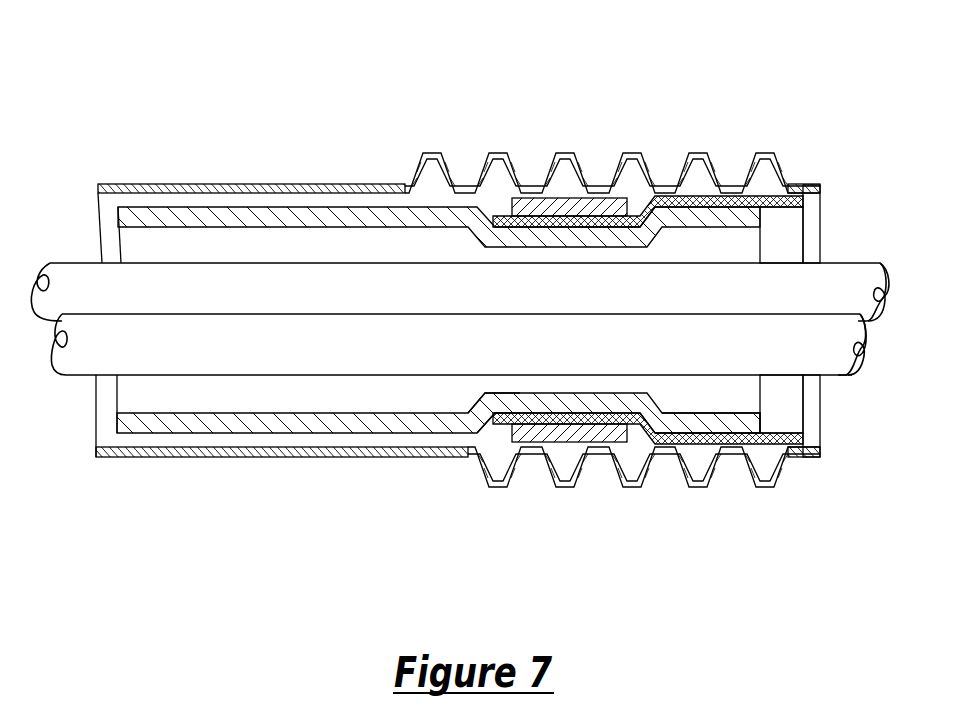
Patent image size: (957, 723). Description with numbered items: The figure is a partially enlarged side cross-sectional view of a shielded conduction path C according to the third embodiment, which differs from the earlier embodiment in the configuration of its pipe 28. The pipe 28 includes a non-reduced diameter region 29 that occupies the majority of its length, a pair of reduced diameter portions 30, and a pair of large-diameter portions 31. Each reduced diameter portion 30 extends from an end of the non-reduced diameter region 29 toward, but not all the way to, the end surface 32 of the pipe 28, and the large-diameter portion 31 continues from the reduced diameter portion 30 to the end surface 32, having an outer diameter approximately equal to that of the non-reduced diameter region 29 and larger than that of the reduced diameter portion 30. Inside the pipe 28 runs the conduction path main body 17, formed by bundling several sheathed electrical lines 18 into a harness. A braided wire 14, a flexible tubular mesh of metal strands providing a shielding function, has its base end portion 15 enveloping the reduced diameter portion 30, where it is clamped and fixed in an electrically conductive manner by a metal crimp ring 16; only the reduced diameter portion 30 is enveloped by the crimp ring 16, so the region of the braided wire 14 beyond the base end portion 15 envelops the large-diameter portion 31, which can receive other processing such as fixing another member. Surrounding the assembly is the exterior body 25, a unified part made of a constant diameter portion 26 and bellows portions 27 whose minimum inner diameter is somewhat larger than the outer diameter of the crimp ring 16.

The braided wire 14 is at (796, 200).
The base end portion 15 is at (568, 226).
The crimp ring 16 is at (575, 434).
The conduction path main body 17 is at (213, 98).
The sheathed electrical line 18 is at (149, 288).
The exterior body 25 is at (648, 121).
The constant diameter portion 26 is at (296, 453).
The bellows portion 27 is at (632, 489).
The pipe 28 is at (380, 196).
The non-reduced diameter region 29 is at (366, 427).
The reduced diameter portion 30 is at (536, 398).
The large-diameter portion 31 is at (723, 423).
The end surface 32 is at (764, 424).
The shielded conduction path C is at (810, 60).